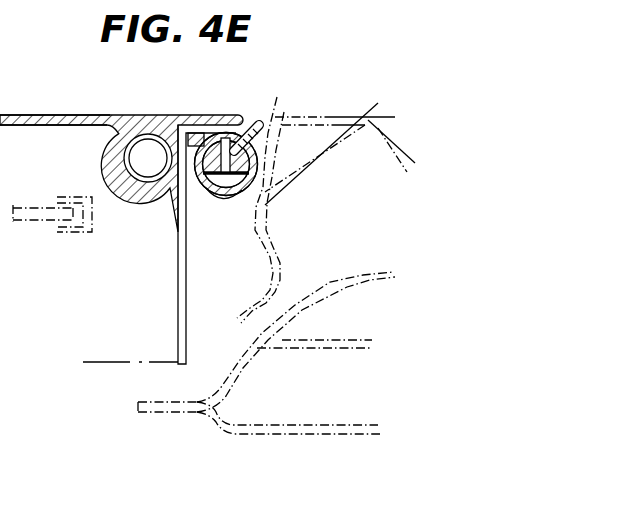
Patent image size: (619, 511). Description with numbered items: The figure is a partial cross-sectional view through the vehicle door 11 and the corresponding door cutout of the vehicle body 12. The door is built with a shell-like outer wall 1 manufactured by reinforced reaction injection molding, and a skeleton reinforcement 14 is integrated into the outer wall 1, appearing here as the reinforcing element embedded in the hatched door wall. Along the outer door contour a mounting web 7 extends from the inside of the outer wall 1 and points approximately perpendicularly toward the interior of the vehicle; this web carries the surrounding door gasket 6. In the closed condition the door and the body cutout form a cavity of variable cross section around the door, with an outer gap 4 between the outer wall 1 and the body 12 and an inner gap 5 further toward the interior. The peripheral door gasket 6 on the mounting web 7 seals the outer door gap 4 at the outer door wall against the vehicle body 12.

The outer wall 1 is at (147, 122).
The vehicle door 11 is at (90, 115).
The skeleton reinforcement 14 is at (135, 160).
The door gasket 6 is at (227, 200).
The mounting web 7 is at (250, 125).
The outer gap 4 is at (260, 197).
The vehicle body 12 is at (306, 120).
The inner gap 5 is at (148, 383).